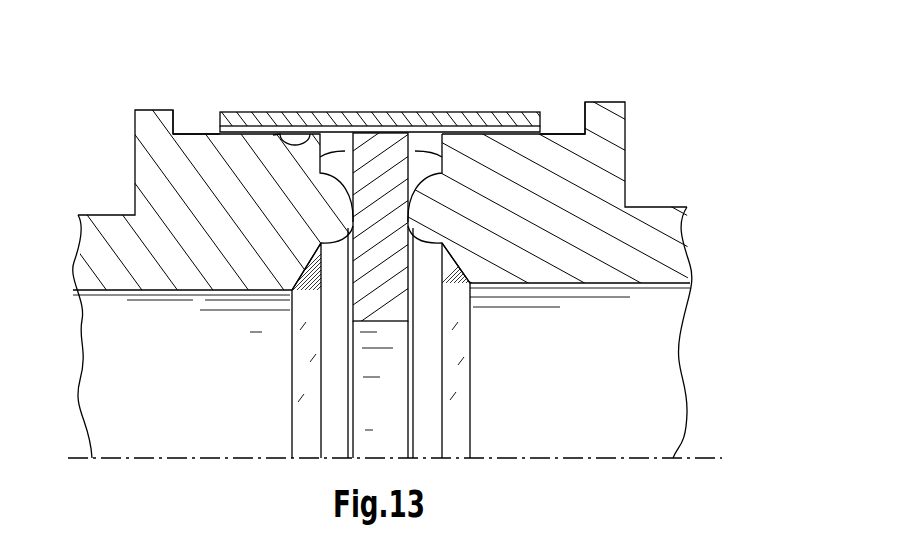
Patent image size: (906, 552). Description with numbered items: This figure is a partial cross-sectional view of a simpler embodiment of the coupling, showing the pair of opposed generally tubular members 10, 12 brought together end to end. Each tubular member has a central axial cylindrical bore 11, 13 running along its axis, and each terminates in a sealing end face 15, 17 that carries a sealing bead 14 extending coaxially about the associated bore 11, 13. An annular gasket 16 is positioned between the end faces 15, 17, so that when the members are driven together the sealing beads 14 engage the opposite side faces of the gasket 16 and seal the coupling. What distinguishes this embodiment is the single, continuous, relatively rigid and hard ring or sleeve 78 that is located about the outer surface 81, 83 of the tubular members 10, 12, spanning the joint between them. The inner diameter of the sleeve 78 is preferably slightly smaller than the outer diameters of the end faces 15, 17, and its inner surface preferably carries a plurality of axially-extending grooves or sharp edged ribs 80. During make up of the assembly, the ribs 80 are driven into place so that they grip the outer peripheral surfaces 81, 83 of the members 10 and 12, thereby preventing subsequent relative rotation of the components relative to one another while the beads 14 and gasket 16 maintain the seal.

The tubular member 10 is at (135, 165).
The central axial cylindrical bore 11 is at (192, 290).
The tubular member 12 is at (647, 207).
The central axial cylindrical bore 13 is at (582, 285).
The sealing bead 14 is at (312, 293).
The sealing end face 15 is at (345, 151).
The annular gasket 16 is at (385, 322).
The sealing end face 17 is at (415, 151).
The ring or sleeve 78 is at (412, 118).
The axially-extending grooves or sharp edged ribs 80 is at (310, 131).
The outer surface 81 is at (195, 133).
The outer surface 83 is at (552, 131).